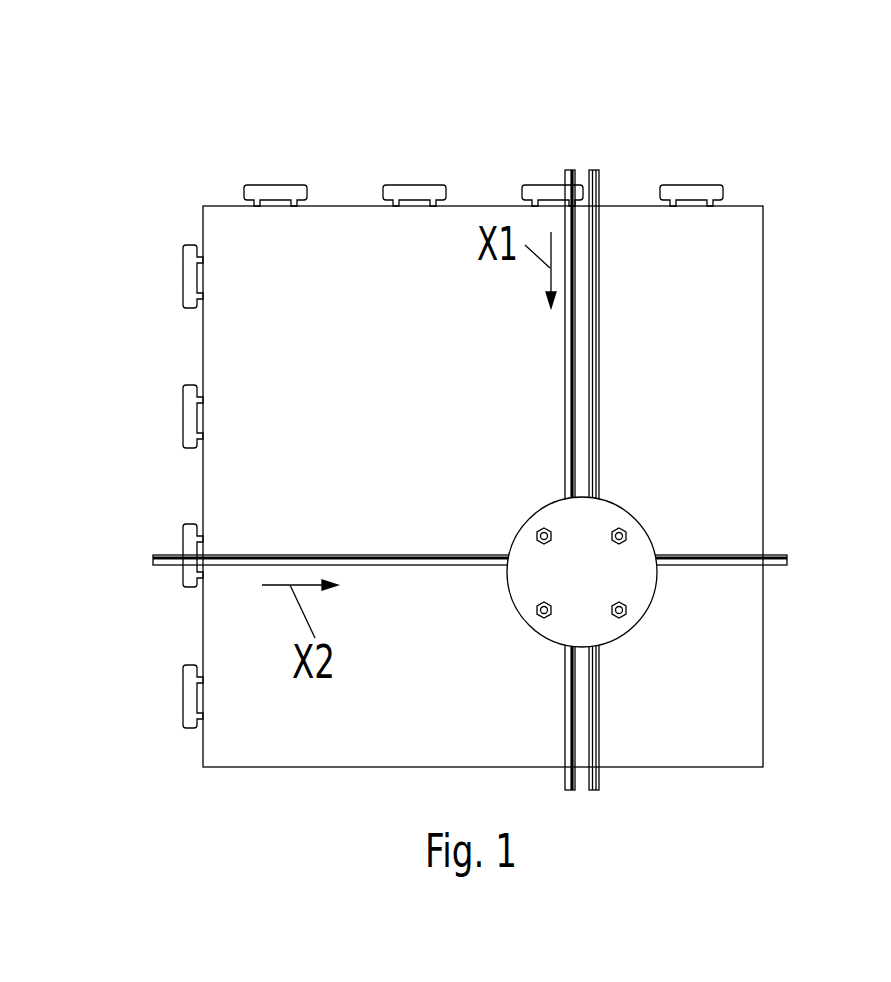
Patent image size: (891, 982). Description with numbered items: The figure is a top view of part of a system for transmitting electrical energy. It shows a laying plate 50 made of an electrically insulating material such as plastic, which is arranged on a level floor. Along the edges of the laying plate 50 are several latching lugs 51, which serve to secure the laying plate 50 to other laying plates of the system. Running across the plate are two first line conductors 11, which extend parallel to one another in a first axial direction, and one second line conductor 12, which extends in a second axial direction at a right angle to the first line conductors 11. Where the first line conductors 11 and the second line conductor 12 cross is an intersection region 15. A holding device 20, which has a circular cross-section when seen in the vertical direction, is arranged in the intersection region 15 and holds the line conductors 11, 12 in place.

The first line conductor 11 is at (570, 403).
The second line conductor 12 is at (408, 560).
The intersection region 15 is at (683, 525).
The holding device 20 is at (638, 580).
The laying plate 50 is at (243, 488).
The latching lug 51 is at (412, 197).